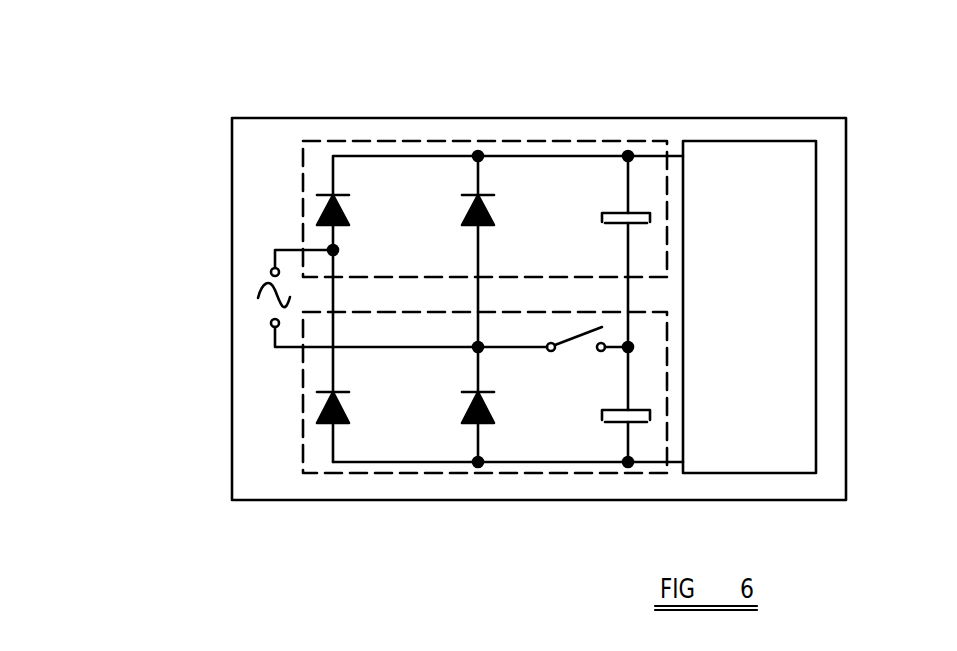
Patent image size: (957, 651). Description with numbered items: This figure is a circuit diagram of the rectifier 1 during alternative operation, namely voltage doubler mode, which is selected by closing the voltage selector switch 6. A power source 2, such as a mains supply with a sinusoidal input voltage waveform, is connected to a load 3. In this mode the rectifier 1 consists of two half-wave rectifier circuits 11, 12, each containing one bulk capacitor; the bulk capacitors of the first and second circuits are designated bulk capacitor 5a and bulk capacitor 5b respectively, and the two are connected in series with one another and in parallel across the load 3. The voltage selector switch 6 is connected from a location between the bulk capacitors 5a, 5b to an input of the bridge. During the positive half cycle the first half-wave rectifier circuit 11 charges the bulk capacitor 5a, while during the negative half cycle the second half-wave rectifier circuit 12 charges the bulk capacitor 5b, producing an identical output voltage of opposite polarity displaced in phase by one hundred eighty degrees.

The rectifier 1 is at (282, 104).
The power source 2 is at (258, 297).
The load 3 is at (816, 192).
The bulk capacitor 5a is at (612, 212).
The bulk capacitor 5b is at (612, 422).
The voltage selector switch 6 is at (572, 345).
The first half-wave rectifier circuit 11 is at (387, 140).
The second half-wave rectifier circuit 12 is at (418, 473).